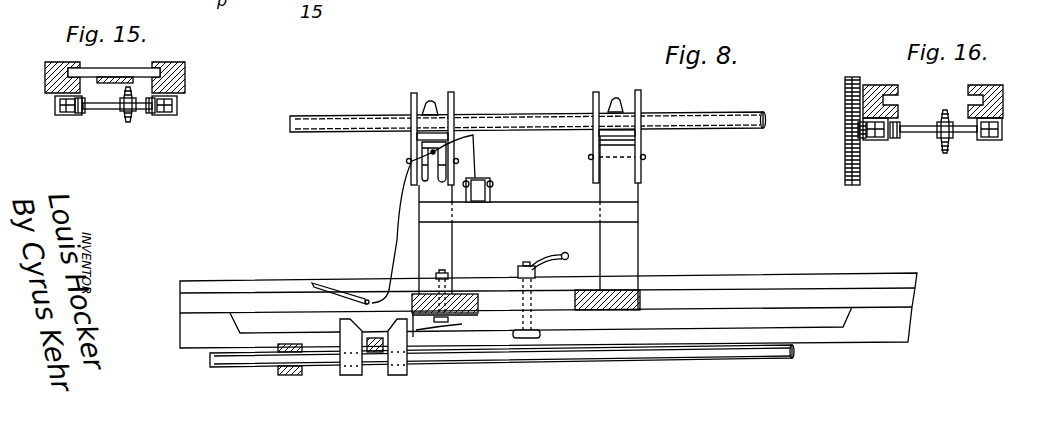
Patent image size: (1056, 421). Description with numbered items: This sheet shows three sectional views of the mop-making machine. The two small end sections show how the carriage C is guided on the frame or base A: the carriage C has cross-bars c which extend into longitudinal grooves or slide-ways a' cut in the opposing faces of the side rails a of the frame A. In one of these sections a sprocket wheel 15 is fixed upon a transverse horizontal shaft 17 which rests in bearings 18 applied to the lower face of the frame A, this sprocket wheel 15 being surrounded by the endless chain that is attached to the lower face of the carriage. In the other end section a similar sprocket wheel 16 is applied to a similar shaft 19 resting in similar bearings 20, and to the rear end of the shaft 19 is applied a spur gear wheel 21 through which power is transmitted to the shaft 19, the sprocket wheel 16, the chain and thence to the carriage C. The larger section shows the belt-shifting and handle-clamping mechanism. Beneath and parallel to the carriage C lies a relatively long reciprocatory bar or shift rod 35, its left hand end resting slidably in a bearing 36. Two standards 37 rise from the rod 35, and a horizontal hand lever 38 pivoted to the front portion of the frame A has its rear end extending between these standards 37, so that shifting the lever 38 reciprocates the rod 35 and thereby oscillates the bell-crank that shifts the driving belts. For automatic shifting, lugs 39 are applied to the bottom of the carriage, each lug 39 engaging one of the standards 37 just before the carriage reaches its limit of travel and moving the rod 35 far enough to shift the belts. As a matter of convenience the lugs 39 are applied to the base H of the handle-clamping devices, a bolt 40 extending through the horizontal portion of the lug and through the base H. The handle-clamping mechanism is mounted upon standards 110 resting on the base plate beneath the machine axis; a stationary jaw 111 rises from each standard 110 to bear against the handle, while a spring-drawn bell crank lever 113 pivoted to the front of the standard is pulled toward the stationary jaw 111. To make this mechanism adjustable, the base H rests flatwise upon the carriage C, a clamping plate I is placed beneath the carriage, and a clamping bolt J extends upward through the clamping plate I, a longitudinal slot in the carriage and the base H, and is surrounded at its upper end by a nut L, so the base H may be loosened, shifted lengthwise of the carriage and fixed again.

In FIG. 15, the frame or base A is at (109, 77).
In FIG. 16, the frame or base A is at (942, 92).
In FIG. 8, the frame or base A is at (548, 302).
In FIG. 15, the carriage C is at (118, 83).
In FIG. 8, the carriage C is at (541, 320).
In FIG. 8, the frame G is at (528, 223).
In FIG. 8, the base of the handle-clamping devices H is at (464, 300).
In FIG. 8, the nut L is at (533, 266).
In FIG. 8, the clamping plate I is at (538, 338).
In FIG. 8, the clamping bolt J is at (534, 300).
In FIG. 8, the standards 110 is at (439, 240).
In FIG. 8, the stationary jaw 111 is at (616, 100).
In FIG. 8, the bell crank lever 113 is at (641, 100).
In FIG. 8, the bolt 40 is at (437, 273).
In FIG. 8, the lugs 39 is at (448, 320).
In FIG. 8, the reciprocatory bar 35 is at (482, 362).
In FIG. 8, the bearing 36 is at (291, 377).
In FIG. 8, the standards 37 is at (350, 378).
In FIG. 8, the horizontal hand lever 38 is at (378, 352).
In FIG. 15, the sprocket wheel 15 is at (134, 116).
In FIG. 15, the transverse horizontal shaft 17 is at (97, 110).
In FIG. 15, the bearings 18 is at (66, 115).
In FIG. 16, the sprocket wheel 16 is at (947, 148).
In FIG. 16, the shaft 19 is at (910, 133).
In FIG. 16, the bearings 20 is at (872, 140).
In FIG. 16, the spur gear wheel 21 is at (860, 160).
In FIG. 15, the side rails a is at (117, 51).
In FIG. 16, the side rails a is at (938, 73).
In FIG. 15, the longitudinal grooves or slide-ways a' is at (121, 52).
In FIG. 16, the longitudinal grooves or slide-ways a' is at (934, 85).
In FIG. 15, the cross-bars c is at (114, 63).